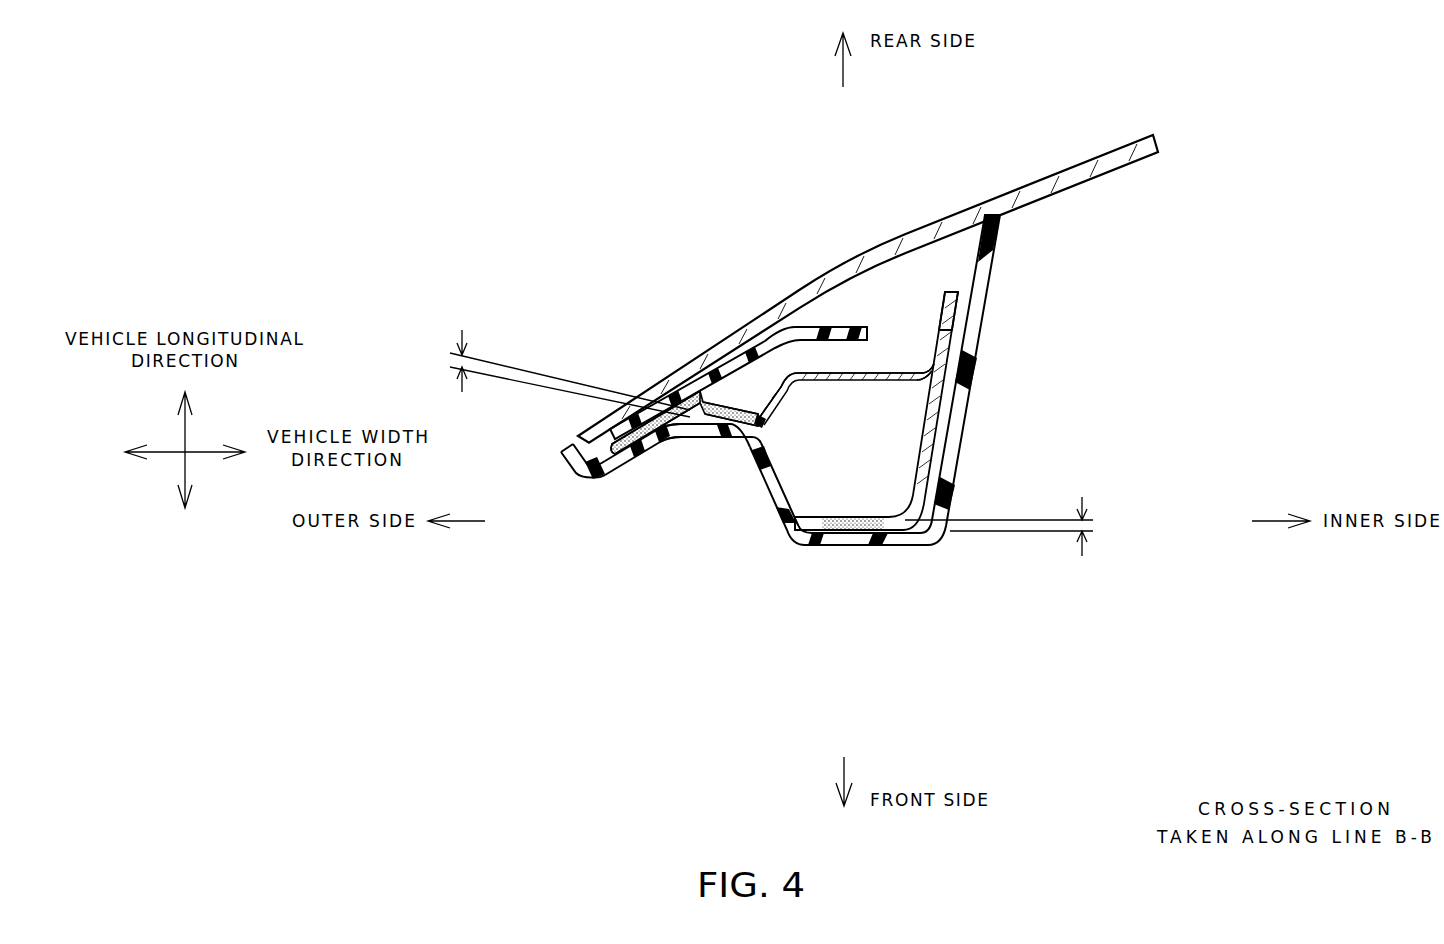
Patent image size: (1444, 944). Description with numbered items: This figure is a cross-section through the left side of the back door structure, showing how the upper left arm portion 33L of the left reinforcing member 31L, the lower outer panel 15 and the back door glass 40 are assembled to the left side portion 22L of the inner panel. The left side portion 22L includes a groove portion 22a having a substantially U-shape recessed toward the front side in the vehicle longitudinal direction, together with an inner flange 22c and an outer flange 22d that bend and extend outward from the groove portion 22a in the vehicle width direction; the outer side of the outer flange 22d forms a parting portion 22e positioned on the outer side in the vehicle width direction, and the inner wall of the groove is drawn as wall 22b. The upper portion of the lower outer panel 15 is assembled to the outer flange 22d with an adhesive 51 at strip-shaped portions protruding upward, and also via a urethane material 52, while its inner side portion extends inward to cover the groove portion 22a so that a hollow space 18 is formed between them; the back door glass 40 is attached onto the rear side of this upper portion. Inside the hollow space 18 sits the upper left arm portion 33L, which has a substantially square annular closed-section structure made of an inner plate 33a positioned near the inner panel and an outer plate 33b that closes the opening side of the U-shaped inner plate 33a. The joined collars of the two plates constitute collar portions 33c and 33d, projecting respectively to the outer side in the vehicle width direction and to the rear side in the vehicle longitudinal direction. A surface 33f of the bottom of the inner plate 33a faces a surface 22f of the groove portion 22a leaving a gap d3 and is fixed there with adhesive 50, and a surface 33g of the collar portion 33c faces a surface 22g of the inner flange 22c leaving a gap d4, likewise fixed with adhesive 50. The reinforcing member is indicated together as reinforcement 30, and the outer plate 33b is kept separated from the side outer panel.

The back door glass 40 is at (1080, 157).
The lower outer panel 15 is at (755, 393).
The hollow space 18 is at (740, 358).
The reinforcement 30 is at (894, 338).
The left reinforcing member 31L is at (887, 352).
The left side portion 22L is at (830, 453).
The groove portion 22a is at (837, 547).
The inner wall of outer panel 22b is at (1000, 267).
The inner flange 22c is at (724, 445).
The outer flange 22d is at (646, 462).
The parting portion 22e is at (570, 453).
The surface of the groove portion 22f is at (785, 547).
The surface of the inner flange 22g is at (685, 447).
The upper left arm portion 33L is at (806, 458).
The inner plate 33a is at (922, 460).
The outer plate 33b is at (920, 348).
The collar portion 33c is at (675, 402).
The collar portion 33d is at (957, 307).
The surface of the bottom portion of the inner plate 33f is at (890, 547).
The surface of the collar portion 33g is at (660, 390).
The adhesive 50 is at (765, 425).
The adhesive 51 is at (641, 470).
The urethane material 52 is at (590, 466).
The gap d3 is at (1093, 531).
The gap d4 is at (450, 353).